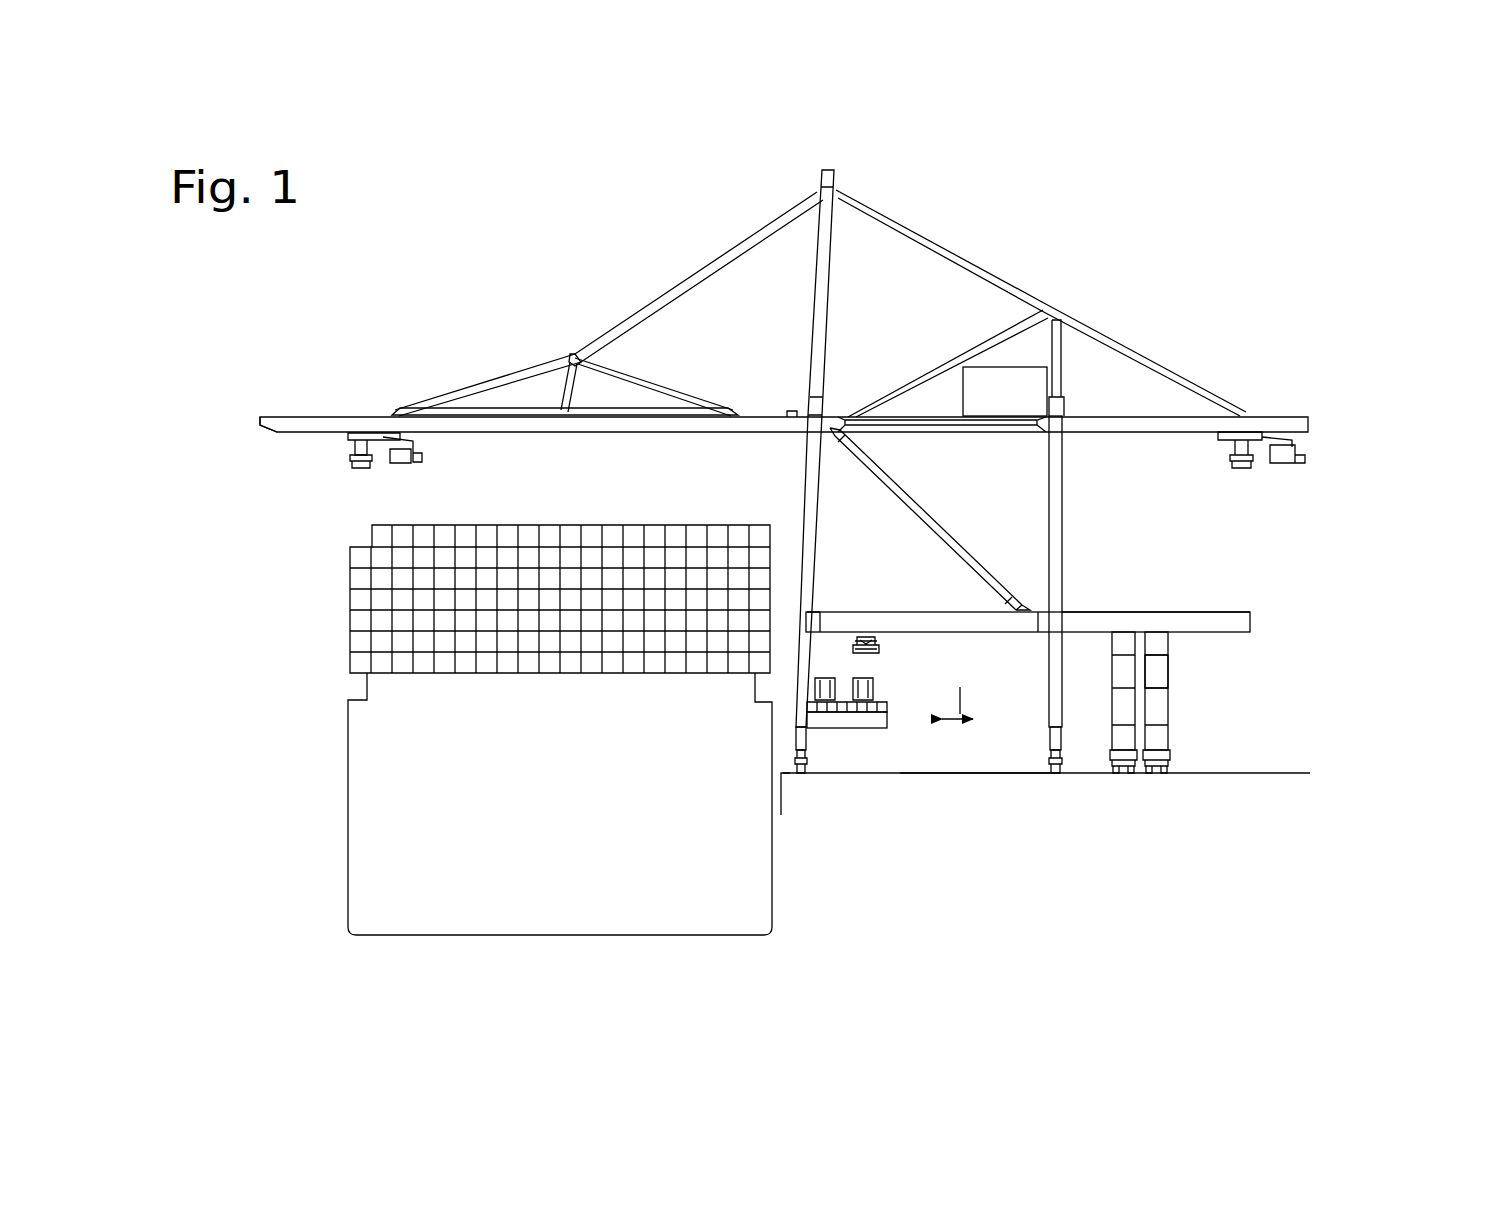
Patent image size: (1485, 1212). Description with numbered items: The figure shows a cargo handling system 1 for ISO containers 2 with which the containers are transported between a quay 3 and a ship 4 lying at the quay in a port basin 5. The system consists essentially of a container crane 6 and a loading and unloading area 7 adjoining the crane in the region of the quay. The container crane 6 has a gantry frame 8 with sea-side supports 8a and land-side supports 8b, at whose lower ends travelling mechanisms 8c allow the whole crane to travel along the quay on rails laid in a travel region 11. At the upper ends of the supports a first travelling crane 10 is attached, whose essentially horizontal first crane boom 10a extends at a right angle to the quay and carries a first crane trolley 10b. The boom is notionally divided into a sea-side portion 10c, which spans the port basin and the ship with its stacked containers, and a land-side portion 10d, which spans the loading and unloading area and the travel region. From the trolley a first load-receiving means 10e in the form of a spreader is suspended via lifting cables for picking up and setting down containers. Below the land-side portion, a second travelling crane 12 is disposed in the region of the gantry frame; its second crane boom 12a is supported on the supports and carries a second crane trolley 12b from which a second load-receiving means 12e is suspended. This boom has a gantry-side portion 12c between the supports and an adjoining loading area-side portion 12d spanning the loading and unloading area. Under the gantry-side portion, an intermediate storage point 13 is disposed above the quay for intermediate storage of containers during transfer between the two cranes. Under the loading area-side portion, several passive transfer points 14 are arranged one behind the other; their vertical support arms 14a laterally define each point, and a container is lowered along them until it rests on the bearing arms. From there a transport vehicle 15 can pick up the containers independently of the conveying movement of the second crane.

The cargo handling system 1 is at (508, 209).
The ISO containers 2 is at (470, 599).
The quay 3 is at (790, 773).
The ship 4 is at (471, 804).
The port basin 5 is at (275, 910).
The container crane 6 is at (1006, 226).
The loading and unloading area 7 is at (1100, 740).
The gantry frame 8 is at (1097, 517).
The sea-side supports 8a is at (714, 448).
The land-side supports 8b is at (1060, 552).
The travelling mechanisms 8c is at (827, 798).
The first travelling crane 10 is at (740, 457).
The first crane boom 10a is at (223, 391).
The first crane trolley 10b is at (296, 359).
The sea-side portion 10c is at (607, 307).
The land-side portion 10d is at (1070, 329).
The first load-receiving means 10e is at (271, 501).
The travel region 11 is at (1018, 852).
The second travelling crane 12 is at (1266, 618).
The second crane boom 12a is at (1237, 587).
The second crane trolley 12b is at (953, 785).
The gantry-side portion 12c is at (1115, 586).
The loading area-side portion 12d is at (1214, 706).
The second load-receiving means 12e is at (866, 645).
The intermediate storage point 13 is at (875, 773).
The transfer points 14 is at (1140, 717).
The vertical support arms 14a is at (1278, 662).
The transport vehicle 15 is at (1130, 762).